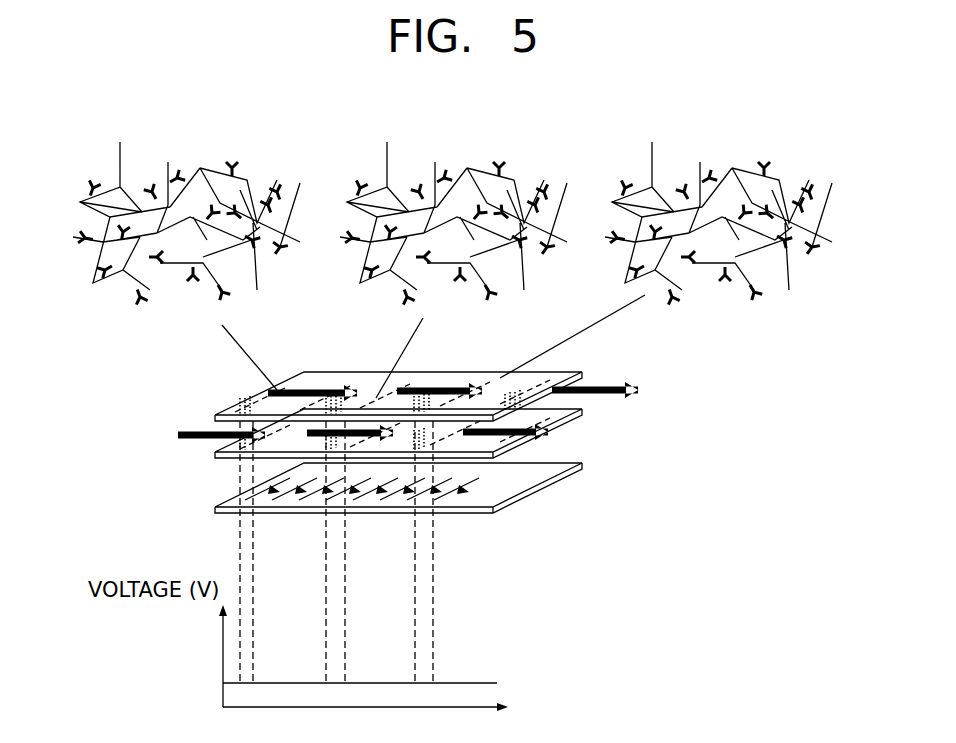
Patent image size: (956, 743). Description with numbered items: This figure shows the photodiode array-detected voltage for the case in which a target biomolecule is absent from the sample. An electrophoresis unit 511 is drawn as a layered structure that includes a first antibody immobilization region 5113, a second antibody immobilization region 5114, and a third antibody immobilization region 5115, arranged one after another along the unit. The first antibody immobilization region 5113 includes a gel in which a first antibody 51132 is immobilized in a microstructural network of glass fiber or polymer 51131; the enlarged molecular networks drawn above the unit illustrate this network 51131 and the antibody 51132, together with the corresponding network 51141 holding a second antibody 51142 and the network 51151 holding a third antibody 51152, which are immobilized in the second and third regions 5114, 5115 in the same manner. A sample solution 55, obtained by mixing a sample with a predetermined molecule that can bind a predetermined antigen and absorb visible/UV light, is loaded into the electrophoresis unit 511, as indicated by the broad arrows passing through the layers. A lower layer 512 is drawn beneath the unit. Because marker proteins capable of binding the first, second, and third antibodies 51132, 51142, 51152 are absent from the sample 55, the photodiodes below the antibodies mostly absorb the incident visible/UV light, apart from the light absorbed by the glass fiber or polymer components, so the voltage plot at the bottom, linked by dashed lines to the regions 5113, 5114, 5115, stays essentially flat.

The electrophoresis unit 511 is at (226, 396).
The alignment layer / substrate 512 is at (552, 497).
The sample solution 55 is at (178, 435).
The first antibody immobilization region 5113 is at (350, 373).
The second antibody immobilization region 5114 is at (435, 375).
The third antibody immobilization region 5115 is at (523, 372).
The microstructural network of glass fiber or polymer 51131 is at (258, 160).
The first antibody 51132 is at (280, 186).
The liquid crystal molecule of second region 51141 is at (525, 160).
The second antibody 51142 is at (547, 186).
The liquid crystal molecule of third region 51151 is at (789, 158).
The third antibody 51152 is at (812, 186).